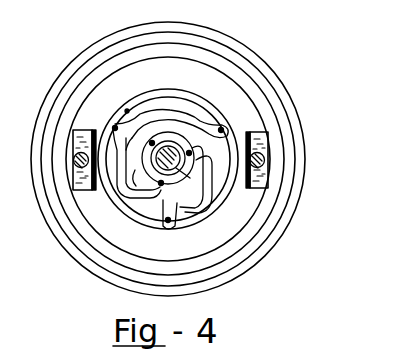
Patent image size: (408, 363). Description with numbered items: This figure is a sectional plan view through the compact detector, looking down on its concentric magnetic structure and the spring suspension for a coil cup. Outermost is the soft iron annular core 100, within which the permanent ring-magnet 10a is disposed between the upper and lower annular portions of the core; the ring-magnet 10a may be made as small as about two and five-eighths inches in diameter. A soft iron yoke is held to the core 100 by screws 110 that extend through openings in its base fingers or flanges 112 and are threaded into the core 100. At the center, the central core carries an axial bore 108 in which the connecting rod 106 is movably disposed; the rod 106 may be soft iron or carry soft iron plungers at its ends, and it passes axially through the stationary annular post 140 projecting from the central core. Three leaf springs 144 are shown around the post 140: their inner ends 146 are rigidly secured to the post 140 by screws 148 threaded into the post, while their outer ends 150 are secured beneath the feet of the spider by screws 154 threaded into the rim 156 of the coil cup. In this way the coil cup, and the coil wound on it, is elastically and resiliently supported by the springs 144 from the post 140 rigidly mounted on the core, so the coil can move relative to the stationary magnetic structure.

The soft iron annular core 100 is at (207, 78).
The permanent ring-magnet 10a is at (267, 88).
The base fingers or flanges 112 is at (265, 148).
The screws 110 is at (267, 173).
The annular post 140 is at (205, 183).
The connecting rod 106 is at (176, 167).
The axial bore 108 is at (176, 177).
The leaf springs 144 is at (182, 190).
The screws 148 is at (148, 186).
The inner ends 146 is at (120, 212).
The screws 154 is at (169, 222).
The rims 156 is at (127, 111).
The outer ends 150 is at (223, 131).